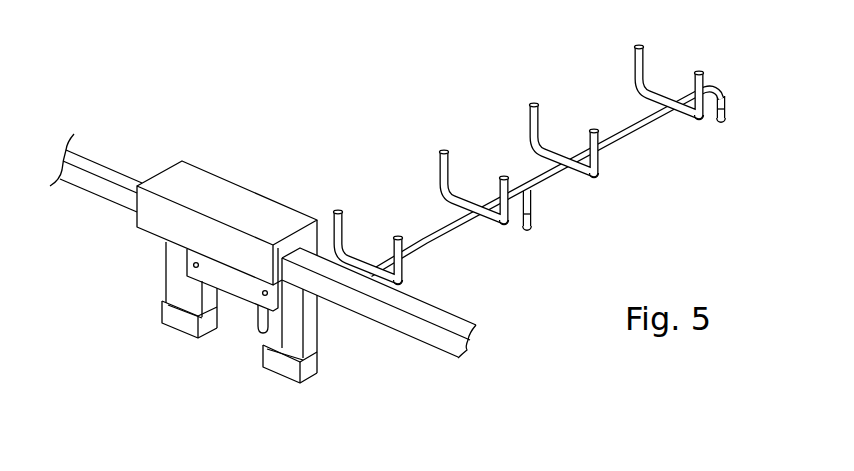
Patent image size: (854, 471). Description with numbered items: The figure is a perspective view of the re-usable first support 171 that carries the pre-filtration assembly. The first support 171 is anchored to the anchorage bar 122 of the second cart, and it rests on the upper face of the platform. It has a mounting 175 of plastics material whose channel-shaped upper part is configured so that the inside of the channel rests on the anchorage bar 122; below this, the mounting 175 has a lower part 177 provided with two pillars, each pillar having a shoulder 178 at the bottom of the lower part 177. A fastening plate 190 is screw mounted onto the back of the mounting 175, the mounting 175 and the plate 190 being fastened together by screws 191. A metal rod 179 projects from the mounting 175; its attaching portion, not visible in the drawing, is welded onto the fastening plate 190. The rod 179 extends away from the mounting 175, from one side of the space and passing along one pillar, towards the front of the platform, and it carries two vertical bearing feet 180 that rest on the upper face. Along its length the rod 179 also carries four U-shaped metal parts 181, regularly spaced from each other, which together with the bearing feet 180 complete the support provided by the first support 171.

The anchorage bar 122 is at (75, 152).
The first support 171 is at (293, 250).
The mounting 175 is at (230, 190).
The lower part 177 is at (313, 322).
The shoulder 178 is at (282, 355).
The metal rod 179 is at (439, 241).
The vertical bearing feet 180 is at (532, 220).
The U-shaped metal parts 181 is at (343, 227).
The fastening plate 190 is at (194, 325).
The screws 191 is at (193, 265).